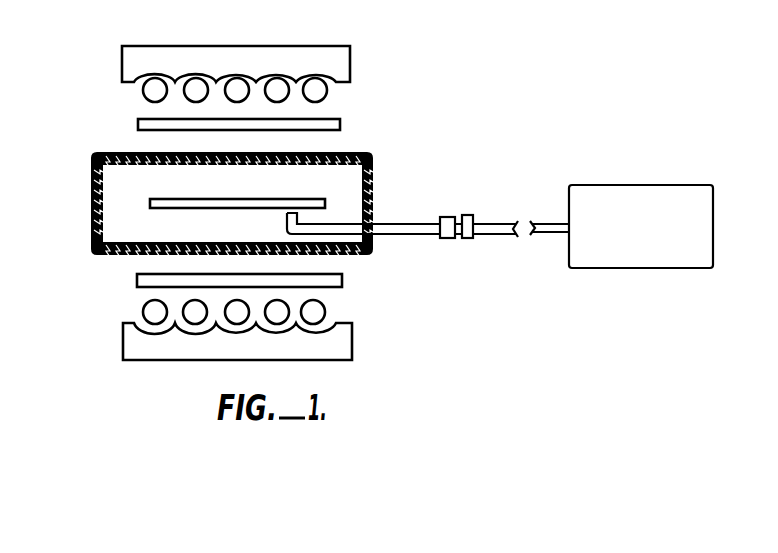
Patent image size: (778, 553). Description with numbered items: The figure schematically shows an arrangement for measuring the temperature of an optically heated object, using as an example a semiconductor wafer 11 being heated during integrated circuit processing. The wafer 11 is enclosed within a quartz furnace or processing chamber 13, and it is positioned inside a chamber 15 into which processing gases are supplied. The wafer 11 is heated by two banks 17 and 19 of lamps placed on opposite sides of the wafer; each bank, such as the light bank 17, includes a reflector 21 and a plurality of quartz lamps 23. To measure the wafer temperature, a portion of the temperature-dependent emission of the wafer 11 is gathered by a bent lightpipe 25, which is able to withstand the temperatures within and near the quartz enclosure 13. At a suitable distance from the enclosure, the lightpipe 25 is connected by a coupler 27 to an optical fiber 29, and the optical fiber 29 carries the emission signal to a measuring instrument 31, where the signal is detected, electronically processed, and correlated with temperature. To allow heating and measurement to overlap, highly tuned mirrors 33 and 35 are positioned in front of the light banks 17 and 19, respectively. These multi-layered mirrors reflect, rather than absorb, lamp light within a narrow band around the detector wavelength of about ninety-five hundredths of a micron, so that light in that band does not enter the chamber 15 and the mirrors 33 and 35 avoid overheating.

The semiconductor wafer 11 is at (330, 178).
The quartz furnace or processing chamber 13 is at (254, 203).
The chamber 15 is at (373, 176).
The bank of lamps 17 is at (225, 77).
The bank of lamps 19 is at (110, 339).
The reflector 21 is at (352, 60).
The quartz lamps 23 is at (288, 100).
The bent lightpipe 25 is at (287, 215).
The coupler 27 is at (447, 217).
The optical fiber 29 is at (507, 222).
The measuring instrument 31 is at (670, 185).
The mirror 33 is at (138, 124).
The mirror 35 is at (137, 285).